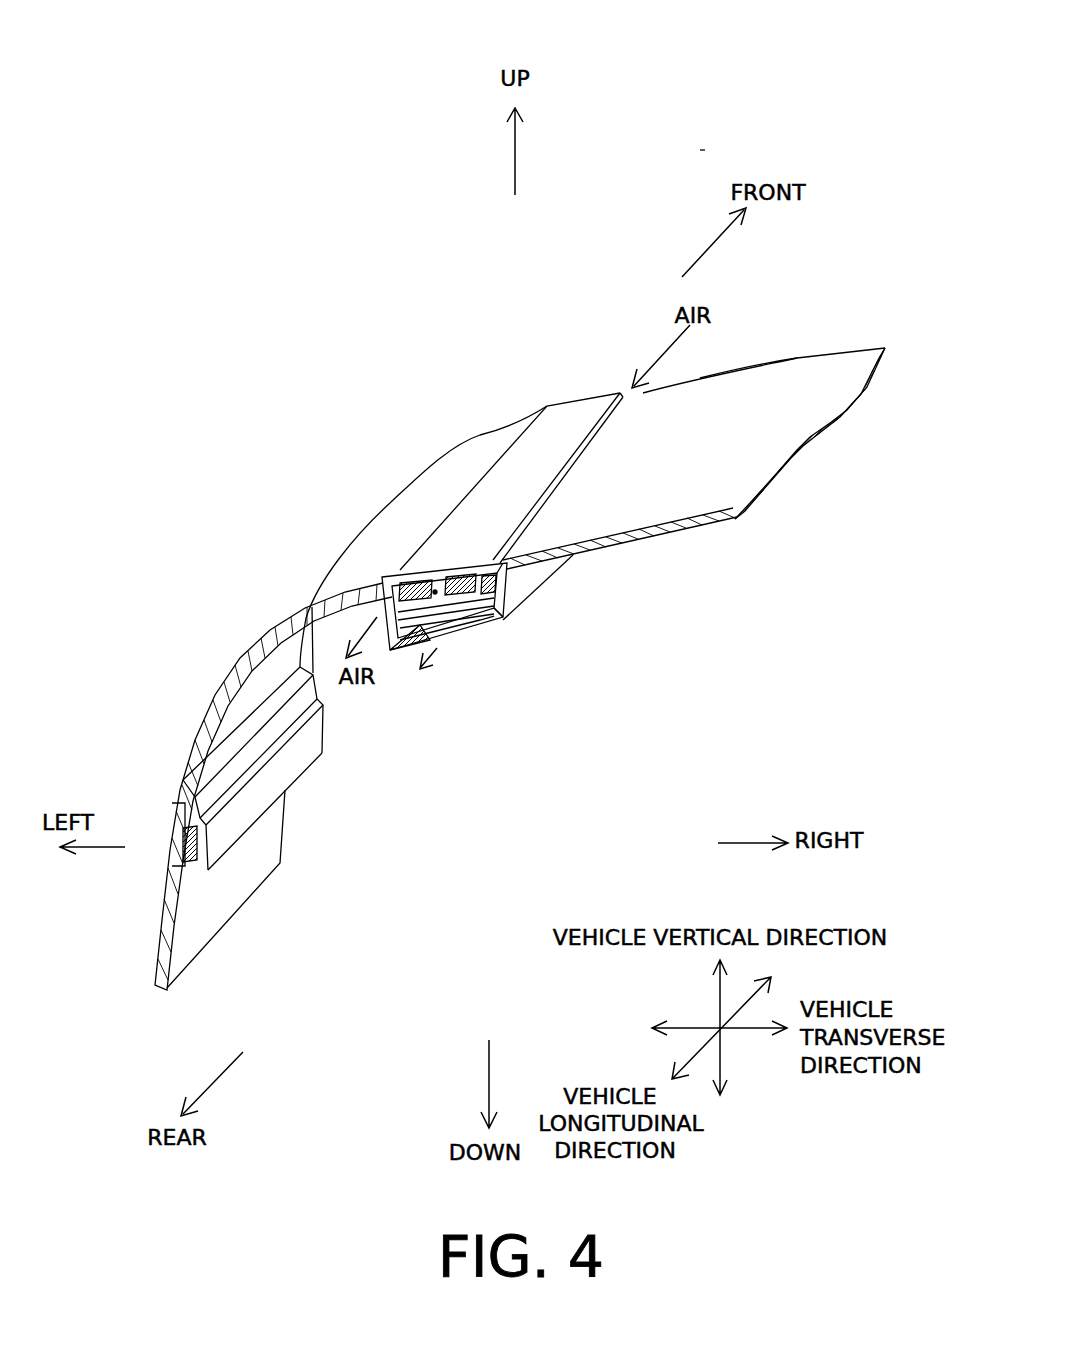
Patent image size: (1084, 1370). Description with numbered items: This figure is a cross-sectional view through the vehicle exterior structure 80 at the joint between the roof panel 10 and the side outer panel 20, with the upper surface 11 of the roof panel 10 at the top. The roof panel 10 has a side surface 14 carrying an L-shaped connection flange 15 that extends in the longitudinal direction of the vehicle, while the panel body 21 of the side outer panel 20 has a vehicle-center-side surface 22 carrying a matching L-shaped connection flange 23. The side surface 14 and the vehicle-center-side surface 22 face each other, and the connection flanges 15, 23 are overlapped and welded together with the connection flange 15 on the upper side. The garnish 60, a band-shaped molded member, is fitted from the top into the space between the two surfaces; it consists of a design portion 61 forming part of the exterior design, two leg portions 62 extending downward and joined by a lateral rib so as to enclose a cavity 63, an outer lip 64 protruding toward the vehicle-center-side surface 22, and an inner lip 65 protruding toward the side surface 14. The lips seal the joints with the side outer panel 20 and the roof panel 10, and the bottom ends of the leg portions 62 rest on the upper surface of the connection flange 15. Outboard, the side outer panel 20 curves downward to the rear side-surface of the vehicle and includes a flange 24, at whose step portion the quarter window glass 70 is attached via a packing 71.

The roof panel 10 is at (841, 366).
The upper surface of instrument panel 11 is at (795, 390).
The side surface 14 is at (503, 623).
The connection flange 15 is at (497, 632).
The side outer panel 20 is at (381, 490).
The panel body 21 is at (370, 547).
The vehicle-center-side surface 22 is at (412, 655).
The connection flange 23 is at (442, 655).
The flange 24 is at (240, 818).
The garnish 60 is at (597, 380).
The design portion 61 is at (563, 427).
The leg portions 62 is at (465, 655).
The cavity 63 is at (435, 592).
The outer lip 64 is at (395, 572).
The inner lip 65 is at (502, 570).
The quarter window glass 70 is at (146, 927).
The packing 71 is at (183, 868).
The vehicle exterior structure 80 is at (708, 143).